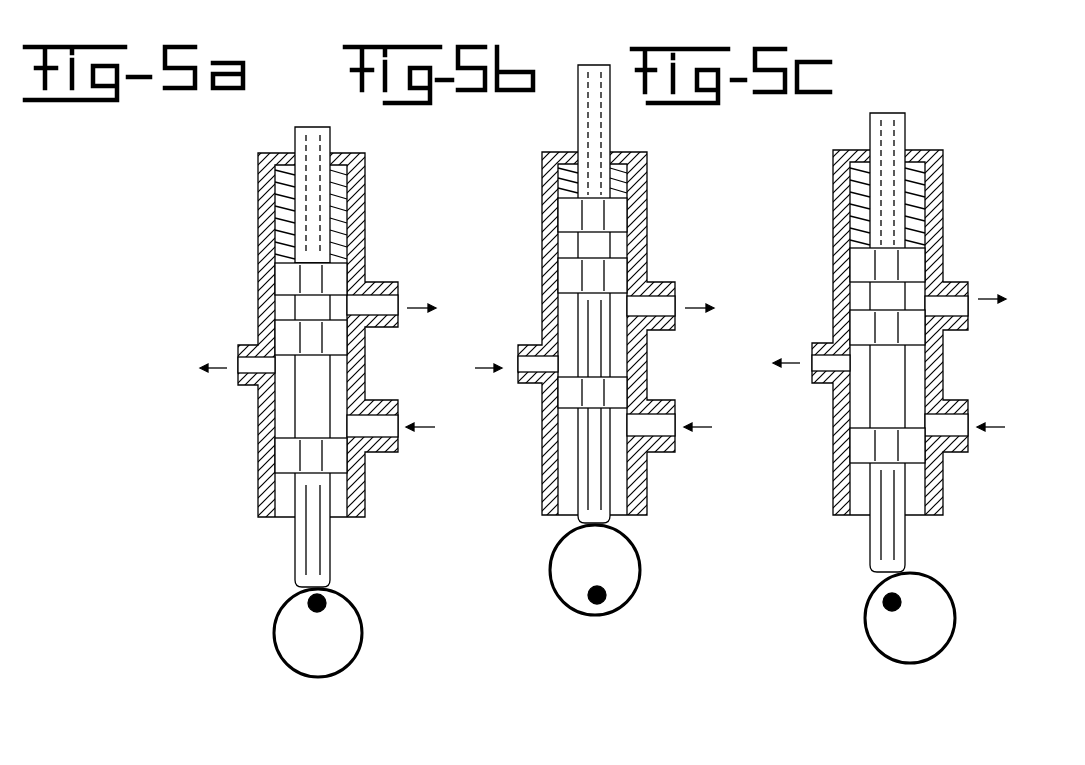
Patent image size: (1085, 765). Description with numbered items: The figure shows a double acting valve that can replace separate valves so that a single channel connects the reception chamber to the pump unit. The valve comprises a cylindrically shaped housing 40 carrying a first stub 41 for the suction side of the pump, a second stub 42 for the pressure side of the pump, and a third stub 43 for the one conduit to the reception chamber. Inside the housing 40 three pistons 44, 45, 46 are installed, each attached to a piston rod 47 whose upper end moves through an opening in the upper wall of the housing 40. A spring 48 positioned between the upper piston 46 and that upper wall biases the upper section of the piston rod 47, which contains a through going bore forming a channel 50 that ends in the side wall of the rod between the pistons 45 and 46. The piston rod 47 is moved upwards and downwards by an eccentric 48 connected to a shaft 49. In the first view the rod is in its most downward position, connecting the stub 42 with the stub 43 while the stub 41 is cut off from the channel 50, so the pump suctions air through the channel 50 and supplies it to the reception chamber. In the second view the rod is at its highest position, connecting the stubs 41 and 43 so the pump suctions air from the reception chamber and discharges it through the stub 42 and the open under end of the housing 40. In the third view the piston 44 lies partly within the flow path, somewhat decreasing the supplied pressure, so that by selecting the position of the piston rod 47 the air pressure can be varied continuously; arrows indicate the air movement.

In FIG. 5A, the housing 40 is at (360, 192).
In FIG. 5B, the housing 40 is at (640, 192).
In FIG. 5C, the housing 40 is at (936, 192).
In FIG. 5A, the first stub 41 is at (382, 300).
In FIG. 5B, the first stub 41 is at (675, 300).
In FIG. 5C, the first stub 41 is at (962, 292).
In FIG. 5A, the second stub 42 is at (384, 412).
In FIG. 5B, the second stub 42 is at (712, 395).
In FIG. 5C, the second stub 42 is at (958, 412).
In FIG. 5A, the third stub 43 is at (262, 352).
In FIG. 5B, the third stub 43 is at (535, 350).
In FIG. 5C, the third stub 43 is at (828, 345).
In FIG. 5A, the piston 44 is at (350, 470).
In FIG. 5B, the piston 44 is at (645, 385).
In FIG. 5C, the piston 44 is at (945, 466).
In FIG. 5A, the piston 45 is at (358, 340).
In FIG. 5B, the piston 45 is at (640, 280).
In FIG. 5C, the piston 45 is at (945, 340).
In FIG. 5A, the upper piston 46 is at (345, 282).
In FIG. 5B, the upper piston 46 is at (640, 222).
In FIG. 5C, the upper piston 46 is at (932, 270).
In FIG. 5A, the piston rod 47 is at (318, 545).
In FIG. 5B, the piston rod 47 is at (615, 518).
In FIG. 5C, the piston rod 47 is at (905, 540).
In FIG. 5A, the spring / eccentric 48 is at (345, 210).
In FIG. 5B, the spring / eccentric 48 is at (628, 160).
In FIG. 5C, the spring / eccentric 48 is at (920, 158).
In FIG. 5A, the shaft 49 is at (326, 603).
In FIG. 5B, the shaft 49 is at (605, 605).
In FIG. 5C, the shaft 49 is at (884, 602).
In FIG. 5A, the channel 50 is at (330, 140).